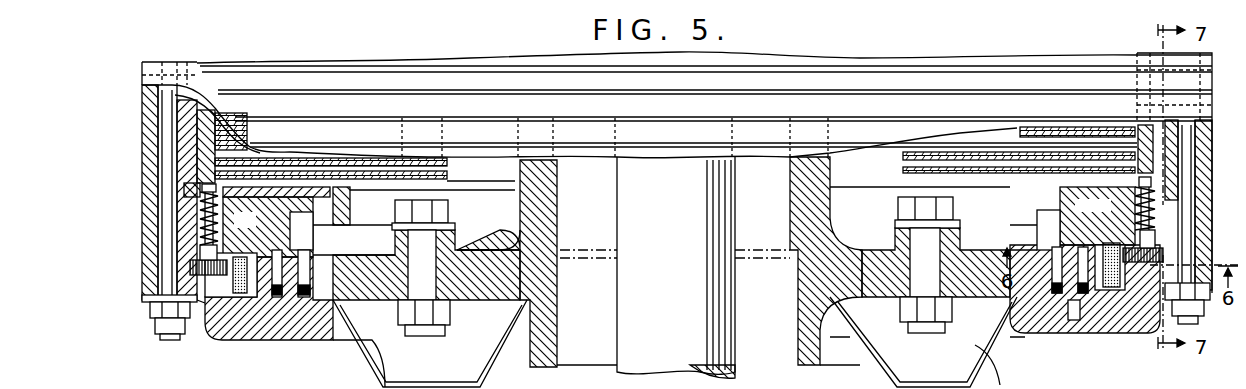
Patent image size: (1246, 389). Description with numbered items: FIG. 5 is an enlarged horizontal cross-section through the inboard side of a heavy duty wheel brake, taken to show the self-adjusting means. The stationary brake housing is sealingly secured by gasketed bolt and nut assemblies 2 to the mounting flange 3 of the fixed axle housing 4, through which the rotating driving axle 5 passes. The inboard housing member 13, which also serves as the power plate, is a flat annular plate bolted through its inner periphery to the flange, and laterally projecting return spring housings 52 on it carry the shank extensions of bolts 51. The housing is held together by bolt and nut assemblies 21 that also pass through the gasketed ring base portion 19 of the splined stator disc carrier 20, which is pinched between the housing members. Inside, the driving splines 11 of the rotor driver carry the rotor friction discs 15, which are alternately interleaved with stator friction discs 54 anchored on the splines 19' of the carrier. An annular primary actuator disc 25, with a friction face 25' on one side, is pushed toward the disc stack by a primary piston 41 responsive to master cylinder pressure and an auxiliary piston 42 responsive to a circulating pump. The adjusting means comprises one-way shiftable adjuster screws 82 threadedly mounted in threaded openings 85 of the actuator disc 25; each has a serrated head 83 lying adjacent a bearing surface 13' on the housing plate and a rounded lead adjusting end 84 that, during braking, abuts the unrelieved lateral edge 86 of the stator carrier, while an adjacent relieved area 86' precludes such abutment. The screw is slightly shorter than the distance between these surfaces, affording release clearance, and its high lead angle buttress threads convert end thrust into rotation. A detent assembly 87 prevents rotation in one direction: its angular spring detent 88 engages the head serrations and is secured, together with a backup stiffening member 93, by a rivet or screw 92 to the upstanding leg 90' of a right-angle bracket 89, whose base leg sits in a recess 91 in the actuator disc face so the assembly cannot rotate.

The gasketed bolt and nut assemblies 2 is at (446, 327).
The mounting flange 3 is at (458, 277).
The axle housing 4 is at (530, 205).
The driving axle 5 is at (648, 221).
The driving splines 11 is at (430, 183).
The inboard housing member 13 is at (678, 310).
The bearing surface 13' is at (653, 212).
The rotor friction discs 15 is at (394, 180).
The ring base portion 19 is at (654, 176).
The splines 19' is at (177, 165).
The stator disc carrier 20 is at (150, 97).
The bolt and nut assemblies 21 is at (1200, 226).
The primary actuator disc 25 is at (1097, 216).
The friction face 25' is at (350, 206).
The primary piston 41 is at (275, 290).
The auxiliary piston 42 is at (305, 290).
The bolts 51 is at (375, 380).
The return spring housings 52 is at (421, 373).
The stator friction discs 54 is at (220, 136).
The adjuster screw 82 is at (205, 250).
The head 83 is at (190, 268).
The lead adjusting end 84 is at (202, 205).
The threaded openings 85 is at (200, 220).
The lateral edge 86 is at (1187, 141).
The relieved area 86' is at (148, 179).
The detent assembly 87 is at (236, 295).
The spring detent 88 is at (205, 308).
The bracket 89 is at (302, 245).
The upstanding leg 90' is at (1062, 330).
The recess 91 is at (276, 222).
The rivet or screw 92 is at (675, 230).
The stiffening member 93 is at (1112, 290).